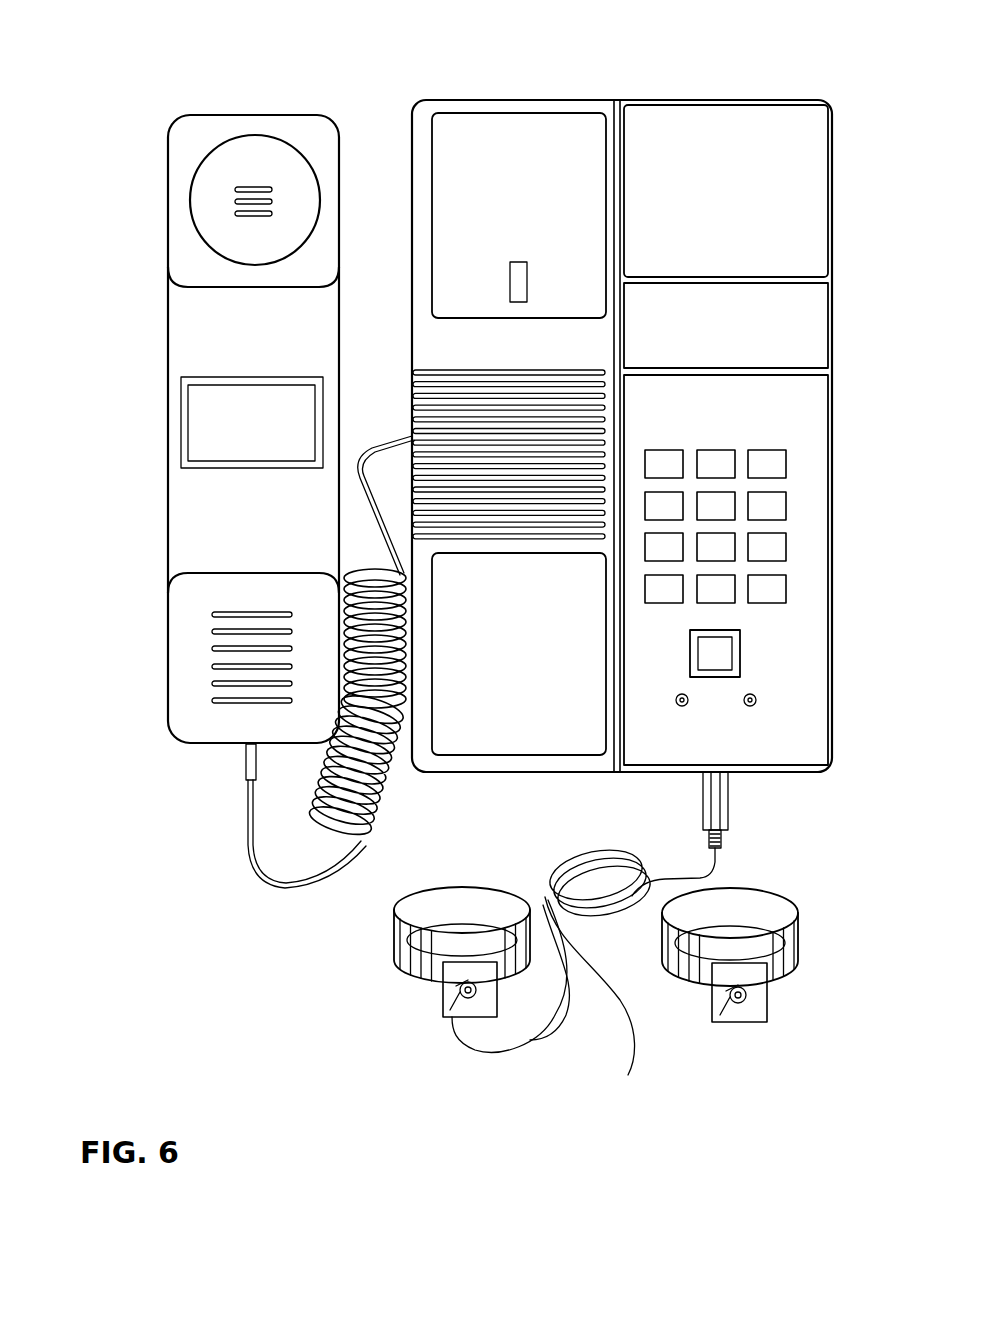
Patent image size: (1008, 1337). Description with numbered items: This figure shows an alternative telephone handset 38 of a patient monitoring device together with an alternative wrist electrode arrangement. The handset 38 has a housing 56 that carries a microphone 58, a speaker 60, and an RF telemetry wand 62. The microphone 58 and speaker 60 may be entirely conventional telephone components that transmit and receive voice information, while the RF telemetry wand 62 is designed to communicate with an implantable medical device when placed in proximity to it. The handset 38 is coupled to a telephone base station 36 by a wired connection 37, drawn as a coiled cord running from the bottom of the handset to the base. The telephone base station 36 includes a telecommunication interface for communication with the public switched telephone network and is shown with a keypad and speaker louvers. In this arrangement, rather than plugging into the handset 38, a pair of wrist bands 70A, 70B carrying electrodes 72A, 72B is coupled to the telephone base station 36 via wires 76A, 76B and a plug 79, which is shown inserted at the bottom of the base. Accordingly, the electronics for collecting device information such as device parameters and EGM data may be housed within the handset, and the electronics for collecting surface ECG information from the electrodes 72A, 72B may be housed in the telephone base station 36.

The telephone handset 38 is at (98, 130).
The telephone base station 36 is at (833, 335).
The wired connection 37 is at (383, 810).
The housing 56 is at (168, 323).
The microphone 58 is at (183, 678).
The speaker 60 is at (198, 200).
The RF telemetry wand 62 is at (188, 385).
The wrist band 70A is at (405, 992).
The wrist band 70B is at (800, 949).
The electrode 72A is at (450, 1020).
The electrode 72B is at (757, 998).
The wire 76A is at (546, 1030).
The wire 76B is at (633, 1020).
The plug 79 is at (730, 832).